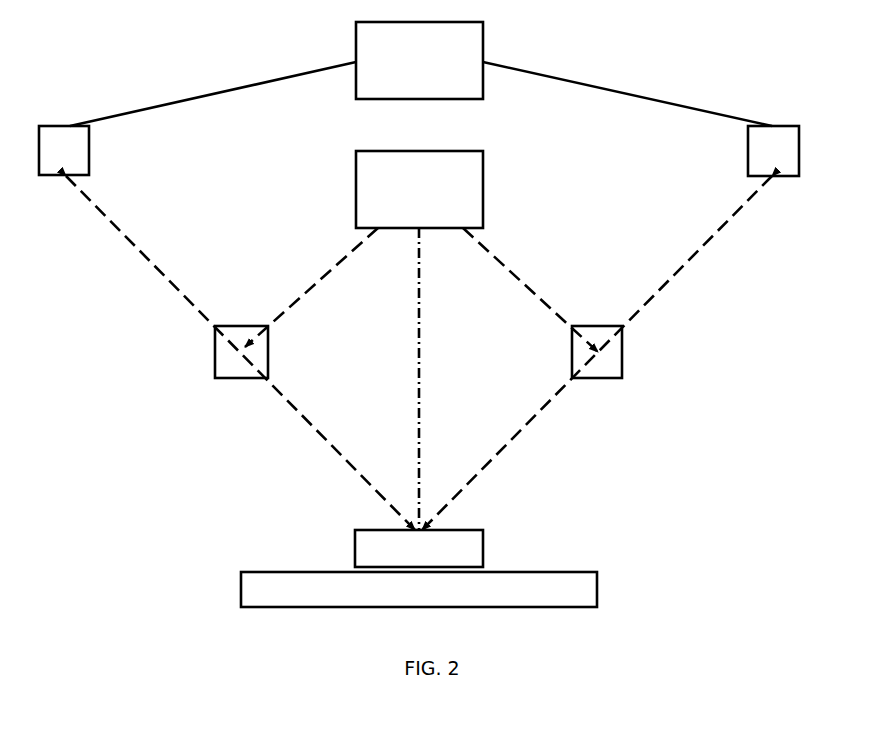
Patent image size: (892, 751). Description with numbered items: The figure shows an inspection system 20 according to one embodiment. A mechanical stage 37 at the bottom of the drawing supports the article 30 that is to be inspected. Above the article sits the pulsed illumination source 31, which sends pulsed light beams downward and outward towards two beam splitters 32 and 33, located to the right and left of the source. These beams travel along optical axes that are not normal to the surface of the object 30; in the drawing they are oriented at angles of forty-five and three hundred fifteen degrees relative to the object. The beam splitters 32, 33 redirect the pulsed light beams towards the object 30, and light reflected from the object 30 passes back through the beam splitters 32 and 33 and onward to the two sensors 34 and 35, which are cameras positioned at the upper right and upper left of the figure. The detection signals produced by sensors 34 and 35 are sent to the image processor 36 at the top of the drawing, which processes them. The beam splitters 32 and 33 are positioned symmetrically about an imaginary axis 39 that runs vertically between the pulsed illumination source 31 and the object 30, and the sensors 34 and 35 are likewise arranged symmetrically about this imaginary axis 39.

The system 20 is at (185, 629).
The article 30 is at (407, 559).
The pulsed illumination source 31 is at (407, 199).
The beam splitter 32 is at (622, 352).
The beam splitter 33 is at (215, 360).
The sensor 34 is at (761, 162).
The sensor 35 is at (52, 162).
The image processor 36 is at (407, 71).
The mechanical stage 37 is at (407, 600).
The imaginary axis 39 is at (421, 418).